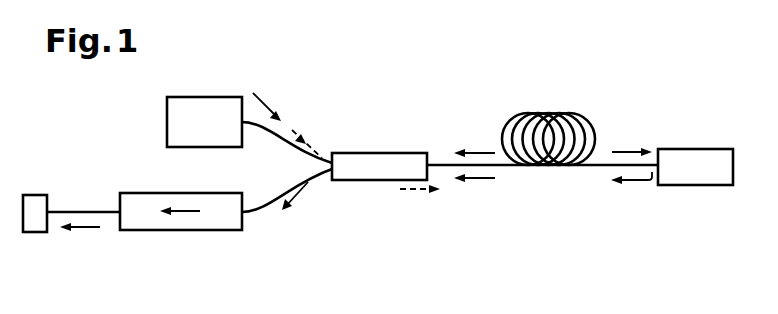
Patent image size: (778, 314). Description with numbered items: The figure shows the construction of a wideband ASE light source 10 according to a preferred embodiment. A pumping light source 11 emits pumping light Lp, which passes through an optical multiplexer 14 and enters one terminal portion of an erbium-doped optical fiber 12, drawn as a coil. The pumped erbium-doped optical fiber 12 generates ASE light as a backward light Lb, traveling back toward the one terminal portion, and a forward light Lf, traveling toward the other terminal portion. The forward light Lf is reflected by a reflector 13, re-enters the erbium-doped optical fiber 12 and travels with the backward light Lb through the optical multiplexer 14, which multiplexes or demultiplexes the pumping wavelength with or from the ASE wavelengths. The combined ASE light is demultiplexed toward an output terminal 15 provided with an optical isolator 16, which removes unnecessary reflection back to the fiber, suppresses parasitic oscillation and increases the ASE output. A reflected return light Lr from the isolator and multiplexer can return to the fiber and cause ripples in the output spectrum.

The wideband ASE light source 10 is at (360, 84).
The pumping light source 11 is at (188, 108).
The erbium-doped optical fiber 12 is at (555, 114).
The reflector 13 is at (696, 150).
The optical multiplexer 14 is at (402, 154).
The output terminal 15 is at (35, 197).
The optical isolator 16 is at (198, 231).